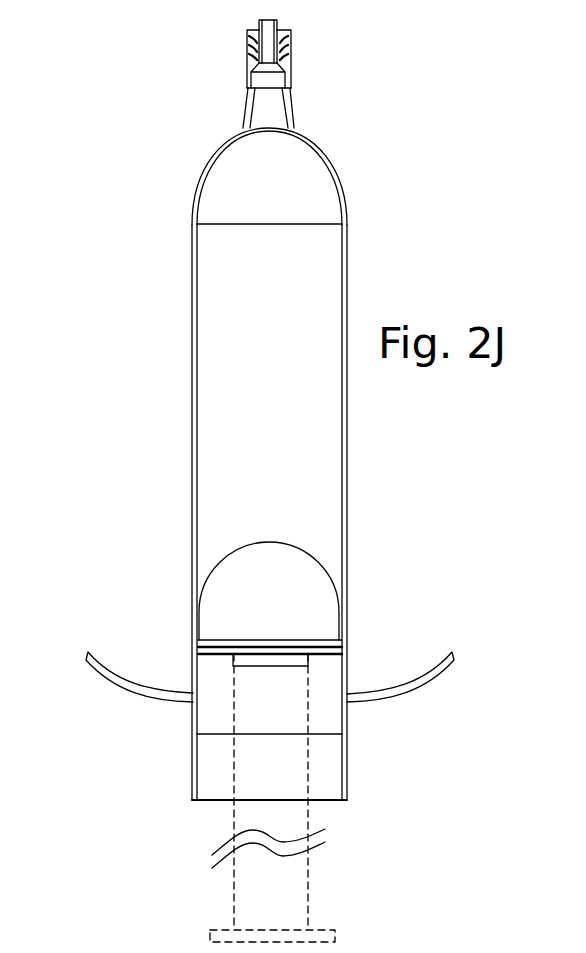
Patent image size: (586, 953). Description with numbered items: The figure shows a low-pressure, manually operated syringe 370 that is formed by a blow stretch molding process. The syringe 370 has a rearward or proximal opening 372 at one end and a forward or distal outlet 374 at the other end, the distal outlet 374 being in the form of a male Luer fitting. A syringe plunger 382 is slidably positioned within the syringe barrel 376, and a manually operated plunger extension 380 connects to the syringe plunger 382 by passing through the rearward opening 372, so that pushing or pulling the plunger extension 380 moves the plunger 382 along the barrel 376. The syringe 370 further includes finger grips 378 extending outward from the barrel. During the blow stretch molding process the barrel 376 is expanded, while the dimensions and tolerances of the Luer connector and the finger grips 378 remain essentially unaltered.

The syringe 370 is at (145, 232).
The proximal opening 372 is at (337, 812).
The distal outlet 374 is at (245, 22).
The syringe barrel 376 is at (191, 378).
The finger grips 378 is at (85, 653).
The plunger extension 380 is at (238, 814).
The syringe plunger 382 is at (313, 585).